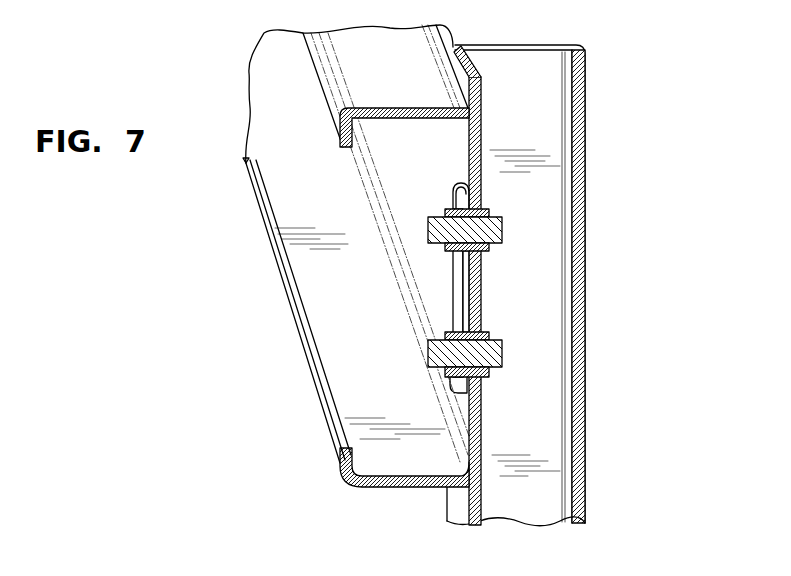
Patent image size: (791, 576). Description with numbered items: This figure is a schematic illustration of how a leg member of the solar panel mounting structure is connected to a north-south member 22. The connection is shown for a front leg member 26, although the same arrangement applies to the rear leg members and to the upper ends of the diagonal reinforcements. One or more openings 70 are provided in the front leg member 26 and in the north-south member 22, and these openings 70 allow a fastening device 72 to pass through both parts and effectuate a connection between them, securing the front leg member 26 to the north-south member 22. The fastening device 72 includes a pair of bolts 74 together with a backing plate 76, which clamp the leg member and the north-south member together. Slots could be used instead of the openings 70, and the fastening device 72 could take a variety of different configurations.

The north-south member 22 is at (353, 62).
The front leg member 26 is at (587, 440).
The opening 70 is at (485, 182).
The fastening device 72 is at (484, 280).
The bolt 74 is at (502, 224).
The backing plate 76 is at (457, 297).